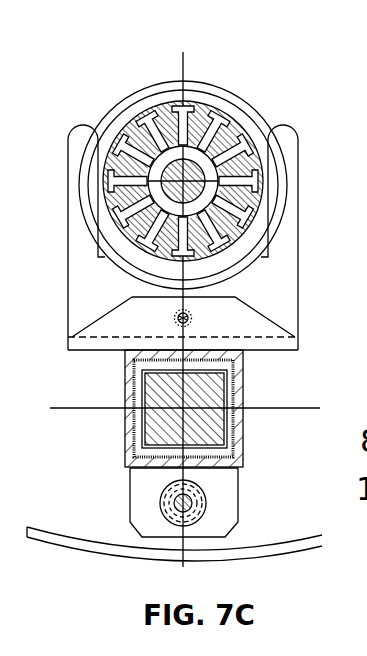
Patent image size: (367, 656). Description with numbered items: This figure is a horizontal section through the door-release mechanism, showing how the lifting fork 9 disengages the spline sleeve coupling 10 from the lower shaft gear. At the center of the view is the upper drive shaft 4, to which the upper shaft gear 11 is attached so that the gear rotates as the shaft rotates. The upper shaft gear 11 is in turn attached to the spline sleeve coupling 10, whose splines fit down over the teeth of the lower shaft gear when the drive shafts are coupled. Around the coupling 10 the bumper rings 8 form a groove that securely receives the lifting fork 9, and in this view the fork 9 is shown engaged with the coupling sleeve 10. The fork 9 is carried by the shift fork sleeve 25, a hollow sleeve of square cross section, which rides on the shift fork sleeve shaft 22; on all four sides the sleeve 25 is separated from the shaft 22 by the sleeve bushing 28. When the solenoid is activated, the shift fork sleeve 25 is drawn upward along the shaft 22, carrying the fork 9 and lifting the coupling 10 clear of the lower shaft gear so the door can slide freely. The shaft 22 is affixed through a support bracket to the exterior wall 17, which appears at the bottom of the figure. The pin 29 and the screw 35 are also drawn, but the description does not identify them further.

The upper drive shaft 4 is at (190, 173).
The bumper rings 8 is at (253, 108).
The lifting fork 9 is at (298, 252).
The spline sleeve coupling 10 is at (154, 146).
The upper shaft gear 11 is at (138, 148).
The exterior wall 17 is at (78, 553).
The shift fork sleeve shaft 22 is at (198, 395).
The shift fork sleeve 25 is at (238, 437).
The sleeve bushing 28 is at (135, 423).
The pivot pin 29 is at (163, 502).
The screw 35 is at (190, 313).